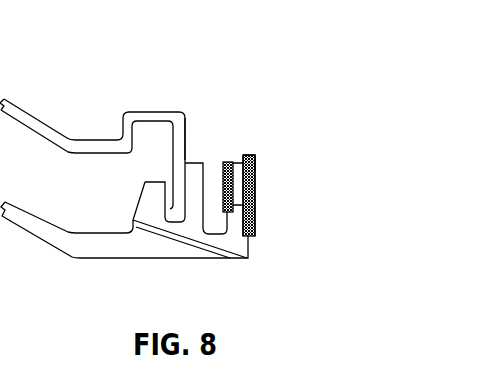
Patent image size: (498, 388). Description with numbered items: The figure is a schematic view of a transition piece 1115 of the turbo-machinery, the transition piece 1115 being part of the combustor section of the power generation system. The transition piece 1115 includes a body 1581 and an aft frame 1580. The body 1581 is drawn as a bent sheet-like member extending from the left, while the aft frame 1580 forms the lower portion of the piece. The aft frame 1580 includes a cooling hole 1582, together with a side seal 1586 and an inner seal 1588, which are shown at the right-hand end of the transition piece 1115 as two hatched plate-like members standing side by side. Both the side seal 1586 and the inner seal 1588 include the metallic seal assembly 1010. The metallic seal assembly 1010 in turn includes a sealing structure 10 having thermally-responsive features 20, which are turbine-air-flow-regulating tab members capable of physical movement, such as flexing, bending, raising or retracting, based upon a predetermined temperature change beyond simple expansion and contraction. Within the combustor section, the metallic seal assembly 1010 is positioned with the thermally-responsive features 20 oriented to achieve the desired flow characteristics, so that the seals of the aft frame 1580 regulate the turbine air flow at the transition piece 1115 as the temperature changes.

The sealing structure 10 is at (261, 138).
The thermally-responsive features 20 is at (257, 212).
The metallic seal assembly 1010 is at (243, 160).
The transition piece 1115 is at (197, 67).
The aft frame 1580 is at (170, 259).
The body 1581 is at (40, 120).
The cooling hole 1582 is at (126, 215).
The side seal 1586 is at (258, 160).
The inner seal 1588 is at (223, 163).